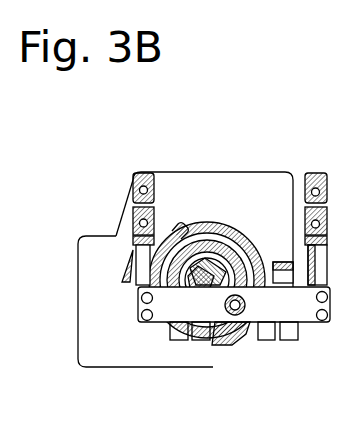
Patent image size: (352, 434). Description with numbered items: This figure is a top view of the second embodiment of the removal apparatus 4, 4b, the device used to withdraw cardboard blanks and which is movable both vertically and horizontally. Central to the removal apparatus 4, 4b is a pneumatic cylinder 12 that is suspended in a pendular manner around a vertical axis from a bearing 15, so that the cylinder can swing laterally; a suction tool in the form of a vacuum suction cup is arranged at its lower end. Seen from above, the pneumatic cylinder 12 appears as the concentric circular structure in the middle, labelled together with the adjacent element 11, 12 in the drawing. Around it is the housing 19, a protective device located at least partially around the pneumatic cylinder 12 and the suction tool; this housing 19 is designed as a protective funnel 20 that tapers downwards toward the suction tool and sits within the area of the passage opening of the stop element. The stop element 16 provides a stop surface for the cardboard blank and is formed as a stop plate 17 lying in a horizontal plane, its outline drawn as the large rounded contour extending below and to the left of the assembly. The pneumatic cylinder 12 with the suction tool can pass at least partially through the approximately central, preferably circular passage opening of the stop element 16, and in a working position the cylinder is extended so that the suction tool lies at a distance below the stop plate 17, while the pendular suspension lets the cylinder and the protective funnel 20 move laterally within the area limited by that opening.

The removal apparatus 4 is at (189, 243).
The removal apparatus 4b is at (123, 143).
The electric motor 11 is at (241, 212).
The pneumatic cylinder 12 is at (235, 268).
The bearing 15 is at (246, 268).
The stop element 16 is at (189, 323).
The stop plate 17 is at (240, 343).
The housing 19 is at (190, 207).
The protective funnel 20 is at (200, 238).